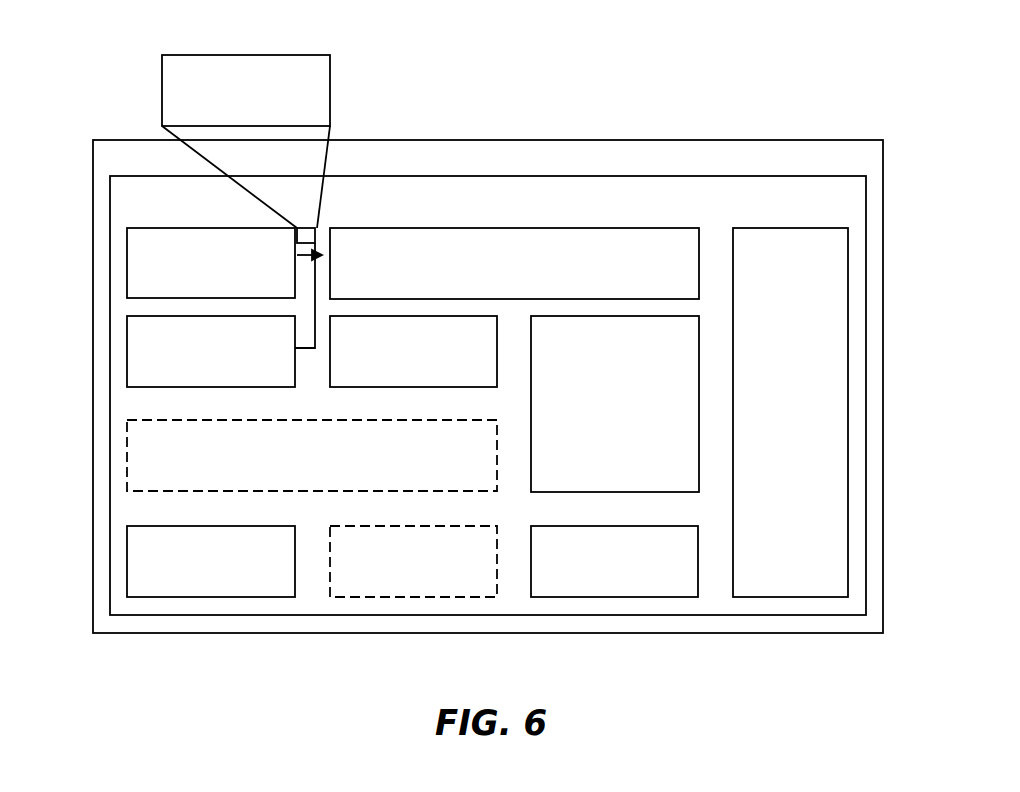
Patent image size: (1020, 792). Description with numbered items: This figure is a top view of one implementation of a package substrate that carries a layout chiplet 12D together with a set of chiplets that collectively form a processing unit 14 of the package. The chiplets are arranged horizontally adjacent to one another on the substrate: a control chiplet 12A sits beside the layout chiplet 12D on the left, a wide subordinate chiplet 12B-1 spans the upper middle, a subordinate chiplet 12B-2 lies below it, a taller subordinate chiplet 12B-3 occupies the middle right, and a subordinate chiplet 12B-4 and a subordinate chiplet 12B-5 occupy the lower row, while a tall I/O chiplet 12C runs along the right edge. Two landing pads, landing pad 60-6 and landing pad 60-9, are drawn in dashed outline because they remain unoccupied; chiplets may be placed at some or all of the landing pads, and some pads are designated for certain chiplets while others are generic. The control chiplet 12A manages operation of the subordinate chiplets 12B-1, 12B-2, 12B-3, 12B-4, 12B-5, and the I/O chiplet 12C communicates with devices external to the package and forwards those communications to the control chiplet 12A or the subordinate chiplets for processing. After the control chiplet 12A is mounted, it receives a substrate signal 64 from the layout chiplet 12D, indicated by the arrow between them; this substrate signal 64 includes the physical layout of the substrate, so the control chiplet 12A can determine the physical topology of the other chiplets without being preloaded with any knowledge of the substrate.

The layout chiplet 12D is at (126, 268).
The control chiplet 12A is at (126, 345).
The processing unit 14 is at (272, 455).
The landing pad 60-6 is at (312, 455).
The landing pad 60-9 is at (413, 561).
The subordinate chiplet 12B-1 is at (565, 227).
The subordinate chiplet 12B-2 is at (360, 316).
The subordinate chiplet 12B-3 is at (665, 316).
The subordinate chiplet 12B-4 is at (126, 562).
The subordinate chiplet 12B-5 is at (645, 598).
The I/O chiplet 12C is at (848, 301).
The substrate signal 64 is at (236, 54).